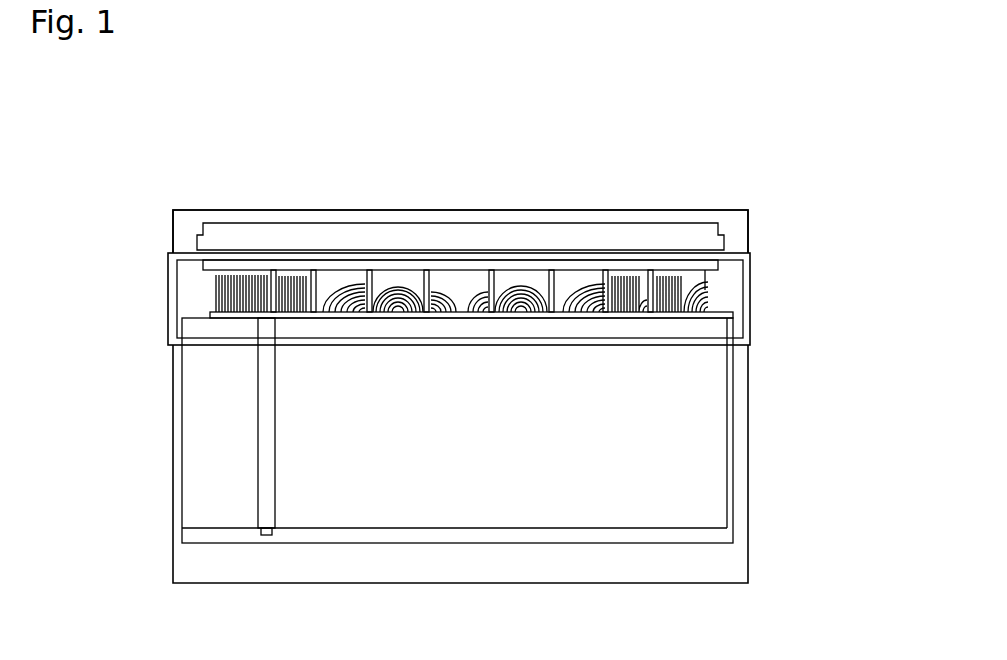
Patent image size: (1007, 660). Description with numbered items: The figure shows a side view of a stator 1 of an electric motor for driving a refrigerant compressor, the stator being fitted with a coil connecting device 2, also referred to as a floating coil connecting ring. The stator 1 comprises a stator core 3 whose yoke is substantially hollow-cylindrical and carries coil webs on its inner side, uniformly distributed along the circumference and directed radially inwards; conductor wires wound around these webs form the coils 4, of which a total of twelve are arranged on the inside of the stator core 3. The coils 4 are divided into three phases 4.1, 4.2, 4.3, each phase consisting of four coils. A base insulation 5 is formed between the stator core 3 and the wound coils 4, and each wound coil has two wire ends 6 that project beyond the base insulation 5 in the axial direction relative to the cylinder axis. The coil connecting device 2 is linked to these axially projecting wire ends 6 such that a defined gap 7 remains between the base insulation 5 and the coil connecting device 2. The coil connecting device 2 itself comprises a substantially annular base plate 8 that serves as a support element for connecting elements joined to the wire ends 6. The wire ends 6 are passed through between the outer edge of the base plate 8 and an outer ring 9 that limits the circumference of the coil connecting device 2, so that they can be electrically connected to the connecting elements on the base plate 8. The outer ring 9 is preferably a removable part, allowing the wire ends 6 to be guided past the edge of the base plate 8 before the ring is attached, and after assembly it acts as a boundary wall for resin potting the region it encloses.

The stator 1 is at (143, 179).
The coil connecting device 2 is at (198, 238).
The stator core 3 is at (717, 372).
The coils 4 is at (496, 338).
The first phase 4.1 is at (410, 288).
The second phase 4.2 is at (332, 303).
The third phase 4.3 is at (213, 297).
The base insulation 5 is at (212, 318).
The wire ends 6 is at (373, 272).
The gap 7 is at (213, 288).
The base plate 8 is at (453, 272).
The outer ring 9 is at (352, 265).